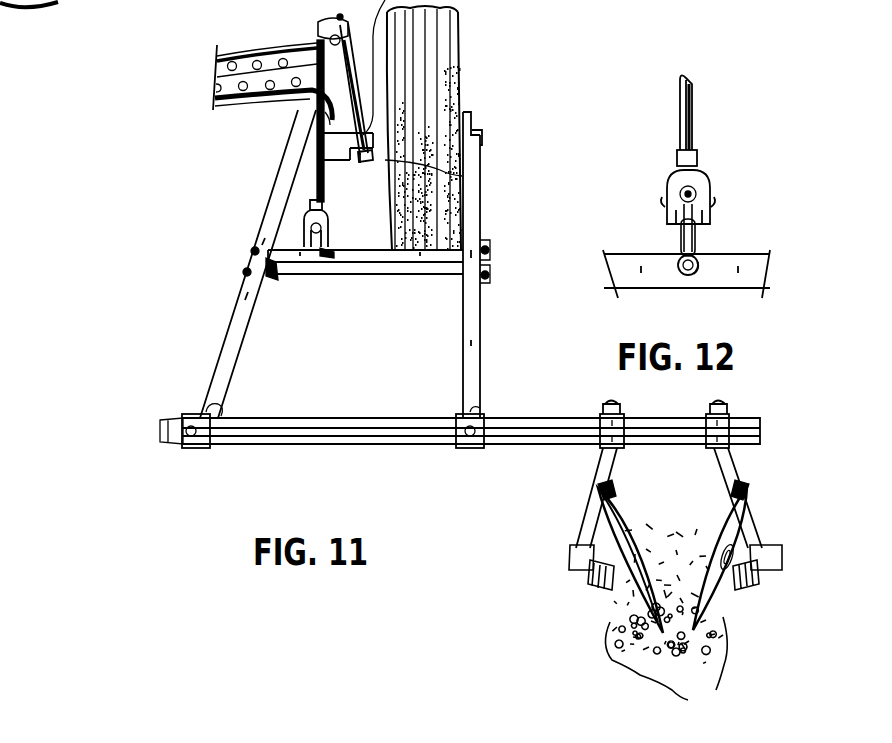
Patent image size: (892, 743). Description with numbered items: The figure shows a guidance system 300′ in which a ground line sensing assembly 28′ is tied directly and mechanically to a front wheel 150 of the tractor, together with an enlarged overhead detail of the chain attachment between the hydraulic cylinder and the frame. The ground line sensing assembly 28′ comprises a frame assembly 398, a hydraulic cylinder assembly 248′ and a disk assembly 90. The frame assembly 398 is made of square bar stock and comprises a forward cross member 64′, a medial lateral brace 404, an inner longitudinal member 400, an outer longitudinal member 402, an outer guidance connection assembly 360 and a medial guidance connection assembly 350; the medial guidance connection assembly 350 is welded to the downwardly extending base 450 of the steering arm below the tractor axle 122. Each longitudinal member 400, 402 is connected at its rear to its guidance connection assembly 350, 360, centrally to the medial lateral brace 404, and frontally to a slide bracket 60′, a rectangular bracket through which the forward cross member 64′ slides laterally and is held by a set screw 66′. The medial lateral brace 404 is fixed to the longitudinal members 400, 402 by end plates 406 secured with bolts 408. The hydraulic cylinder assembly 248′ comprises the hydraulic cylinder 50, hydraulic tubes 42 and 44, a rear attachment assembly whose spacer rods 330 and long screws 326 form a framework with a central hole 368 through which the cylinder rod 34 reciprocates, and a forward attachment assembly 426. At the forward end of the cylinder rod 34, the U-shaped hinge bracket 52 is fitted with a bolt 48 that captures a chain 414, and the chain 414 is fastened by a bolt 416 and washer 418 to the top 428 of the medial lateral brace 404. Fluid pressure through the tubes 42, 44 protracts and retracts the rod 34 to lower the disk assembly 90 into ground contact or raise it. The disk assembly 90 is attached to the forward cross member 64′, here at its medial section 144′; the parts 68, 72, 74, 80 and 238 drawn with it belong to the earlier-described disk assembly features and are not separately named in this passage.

In FIG. 11, the ground line sensing assembly 28′ is at (484, 337).
In FIG. 11, the cylinder rod 34 is at (318, 168).
In FIG. 12, the cylinder rod 34 is at (696, 118).
In FIG. 11, the hydraulic tube 42 is at (280, 46).
In FIG. 11, the hydraulic tube 44 is at (212, 110).
In FIG. 11, the bolt 48 is at (330, 242).
In FIG. 12, the bolt 48 is at (670, 199).
In FIG. 11, the hydraulic cylinder 50 is at (314, 40).
In FIG. 11, the U-shaped hinge bracket 52 is at (306, 216).
In FIG. 12, the U-shaped hinge bracket 52 is at (699, 160).
In FIG. 11, the slide bracket 60′ is at (208, 410).
In FIG. 11, the forward cross member 64′ is at (356, 438).
In FIG. 11, the set screw 66′ is at (192, 448).
In FIG. 11, the bolt 68 is at (612, 403).
In FIG. 11, the shovel arm 72 is at (582, 514).
In FIG. 11, the bracket 74 is at (562, 566).
In FIG. 11, the soil 80 is at (666, 614).
In FIG. 11, the disk assembly 90 is at (704, 474).
In FIG. 11, the tractor axle 122 is at (232, 42).
In FIG. 11, the medial section 144′ is at (340, 421).
In FIG. 11, the front wheel 150 is at (436, 44).
In FIG. 11, the clamp 238 is at (630, 416).
In FIG. 11, the hydraulic cylinder assembly 248′ is at (296, 112).
In FIG. 11, the guidance system 300′ is at (162, 220).
In FIG. 11, the long screw 326 is at (318, 128).
In FIG. 11, the spacer rod 330 is at (226, 82).
In FIG. 11, the medial guidance connection assembly 350 is at (330, 162).
In FIG. 11, the outer guidance connection assembly 360 is at (504, 118).
In FIG. 11, the central hole 368 is at (320, 116).
In FIG. 11, the frame assembly 398 is at (196, 386).
In FIG. 11, the inner longitudinal member 400 is at (232, 318).
In FIG. 11, the outer longitudinal member 402 is at (480, 250).
In FIG. 11, the medial lateral brace 404 is at (351, 266).
In FIG. 12, the medial lateral brace 404 is at (672, 290).
In FIG. 11, the end plate 406 is at (254, 282).
In FIG. 11, the bolt 408 is at (279, 278).
In FIG. 12, the chain 414 is at (698, 237).
In FIG. 12, the bolt 416 is at (688, 278).
In FIG. 12, the washer 418 is at (698, 268).
In FIG. 11, the forward attachment assembly 426 is at (334, 258).
In FIG. 12, the forward attachment assembly 426 is at (670, 235).
In FIG. 11, the top 428 is at (370, 252).
In FIG. 12, the top 428 is at (652, 280).
In FIG. 11, the downwardly extending base 450 is at (480, 172).